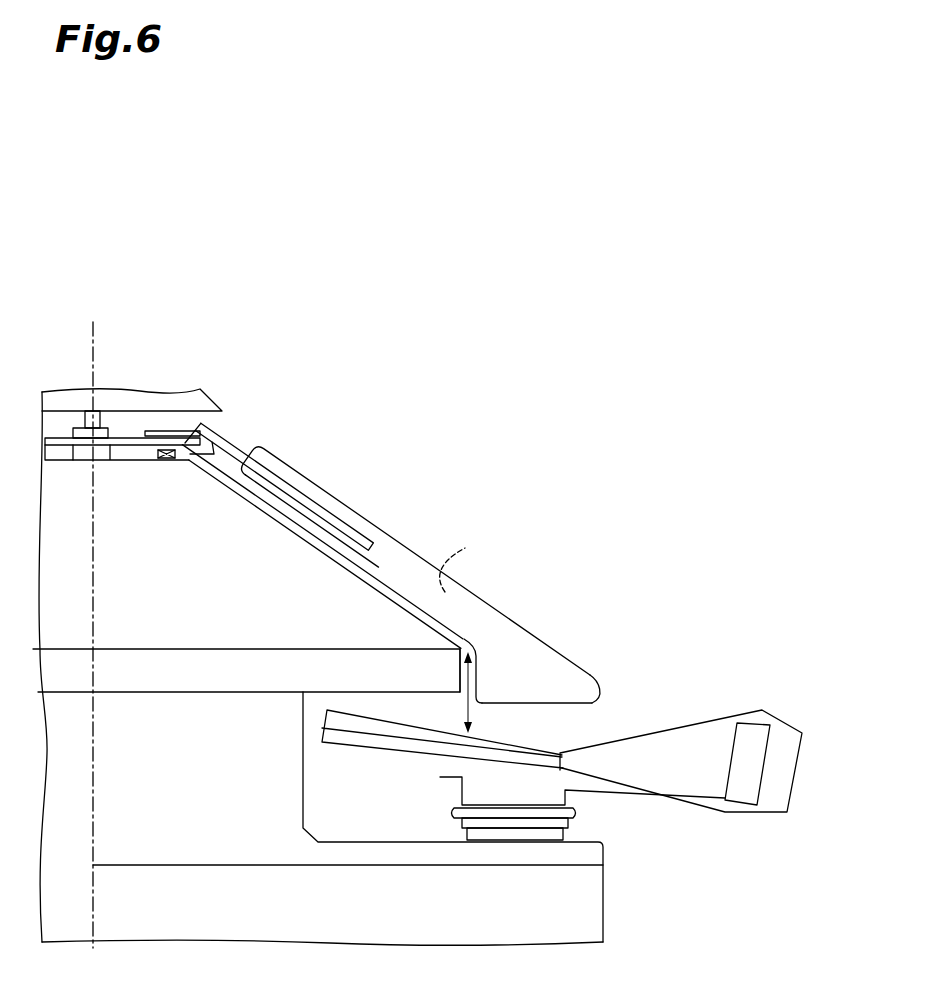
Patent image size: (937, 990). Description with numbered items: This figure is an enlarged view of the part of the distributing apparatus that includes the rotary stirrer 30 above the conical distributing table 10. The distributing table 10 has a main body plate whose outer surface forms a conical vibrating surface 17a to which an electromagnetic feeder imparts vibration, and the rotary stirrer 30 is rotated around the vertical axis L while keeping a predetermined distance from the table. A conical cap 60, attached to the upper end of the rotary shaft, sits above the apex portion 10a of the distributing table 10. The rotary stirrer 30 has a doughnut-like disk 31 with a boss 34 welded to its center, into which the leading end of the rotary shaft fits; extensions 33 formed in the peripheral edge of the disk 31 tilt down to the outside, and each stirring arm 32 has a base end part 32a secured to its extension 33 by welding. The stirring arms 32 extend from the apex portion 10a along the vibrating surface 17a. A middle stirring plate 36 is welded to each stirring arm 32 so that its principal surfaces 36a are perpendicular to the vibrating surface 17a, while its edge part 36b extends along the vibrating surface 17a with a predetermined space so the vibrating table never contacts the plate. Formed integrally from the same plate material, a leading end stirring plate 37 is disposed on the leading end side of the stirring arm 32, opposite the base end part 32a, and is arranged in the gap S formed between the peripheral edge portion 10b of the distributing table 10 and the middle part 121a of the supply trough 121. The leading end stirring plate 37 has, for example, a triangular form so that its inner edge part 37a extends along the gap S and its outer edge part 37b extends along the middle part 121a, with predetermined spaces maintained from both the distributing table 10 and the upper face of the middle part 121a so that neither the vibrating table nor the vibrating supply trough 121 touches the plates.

The vertical axis L is at (90, 336).
The distributing table 10 is at (180, 640).
The apex portion 10a is at (152, 447).
The peripheral edge portion 10b is at (466, 638).
The cap 60 is at (123, 403).
The rotary stirrer 30 is at (356, 549).
The disk 31 is at (128, 459).
The stirring arm 32 is at (337, 518).
The base end part 32a is at (223, 433).
The extension 33 is at (214, 455).
The boss 34 is at (83, 461).
The vibrating surface 17a is at (281, 518).
The middle stirring plate 36 is at (390, 541).
The principal surface 36a is at (453, 572).
The edge part 36b is at (365, 567).
The leading end stirring plate 37 is at (543, 655).
The inner edge part 37a is at (458, 679).
The outer edge part 37b is at (553, 708).
The gap S is at (463, 713).
The supply trough 121 is at (709, 737).
The middle part 121a is at (540, 742).